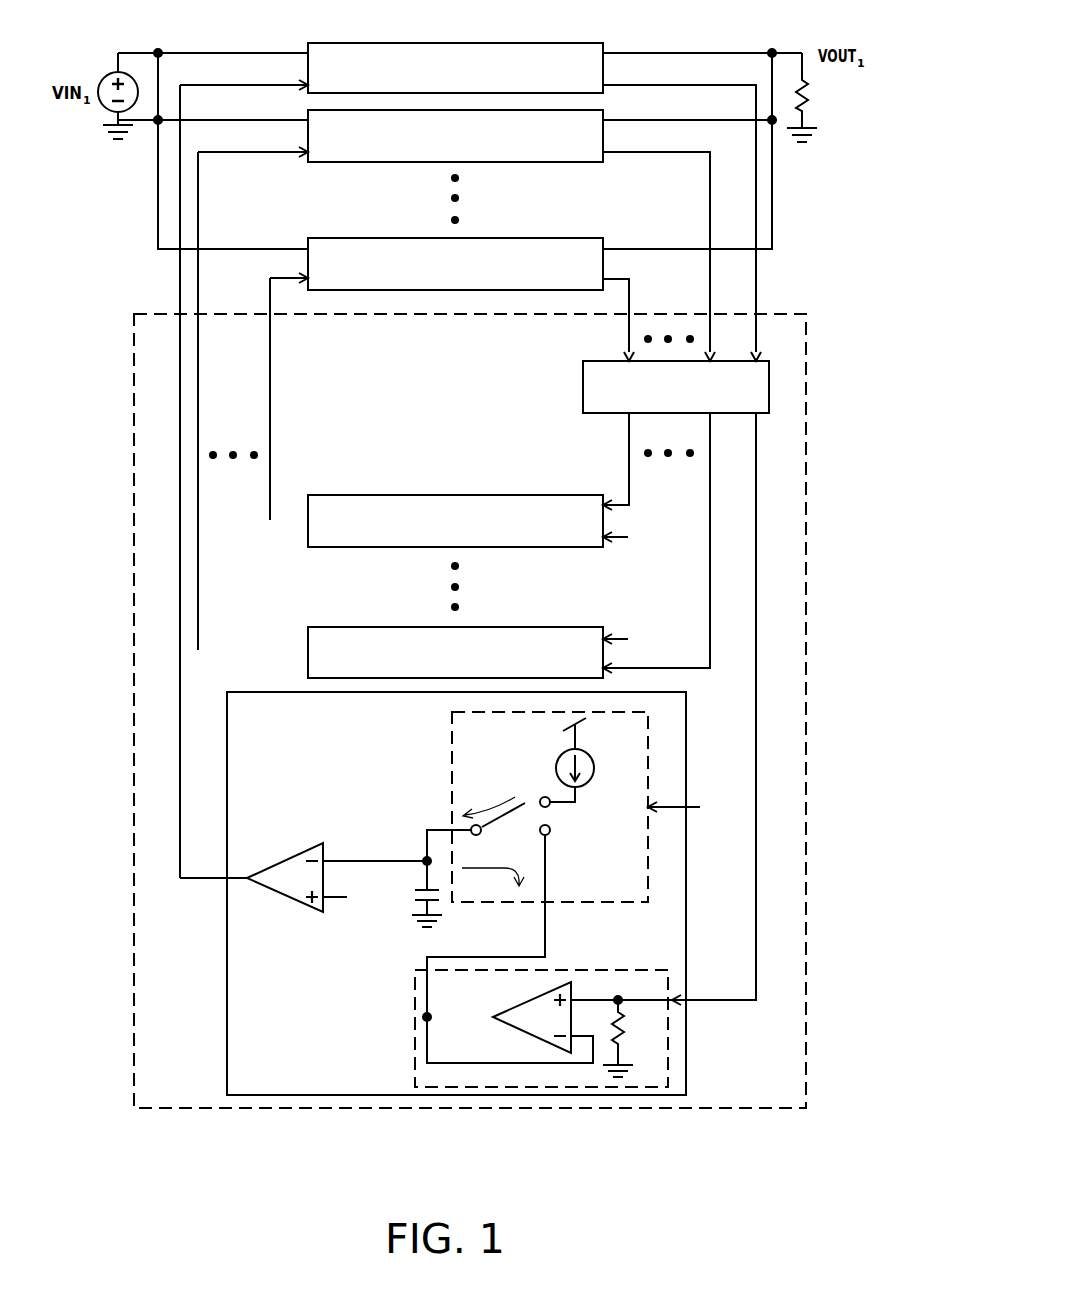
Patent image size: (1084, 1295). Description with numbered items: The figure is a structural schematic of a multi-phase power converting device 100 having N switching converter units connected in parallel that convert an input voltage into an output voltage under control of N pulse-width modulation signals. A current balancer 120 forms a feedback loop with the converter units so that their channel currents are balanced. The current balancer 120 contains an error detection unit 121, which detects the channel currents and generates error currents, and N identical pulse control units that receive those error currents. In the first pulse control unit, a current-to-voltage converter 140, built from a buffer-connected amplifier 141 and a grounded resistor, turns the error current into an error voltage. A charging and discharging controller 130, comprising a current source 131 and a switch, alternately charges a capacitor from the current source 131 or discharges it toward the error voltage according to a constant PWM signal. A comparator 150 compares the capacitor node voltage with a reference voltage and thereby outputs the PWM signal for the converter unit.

The multi-phase power converting device 100 is at (818, 1200).
The current balancer 120 is at (806, 545).
The error detection unit 121 is at (583, 384).
The charging and discharging controller 130 is at (452, 782).
The current source 131 is at (594, 768).
The current-to-voltage converter 140 is at (415, 1043).
The amplifier 141 is at (533, 1037).
The comparator 150 is at (290, 856).